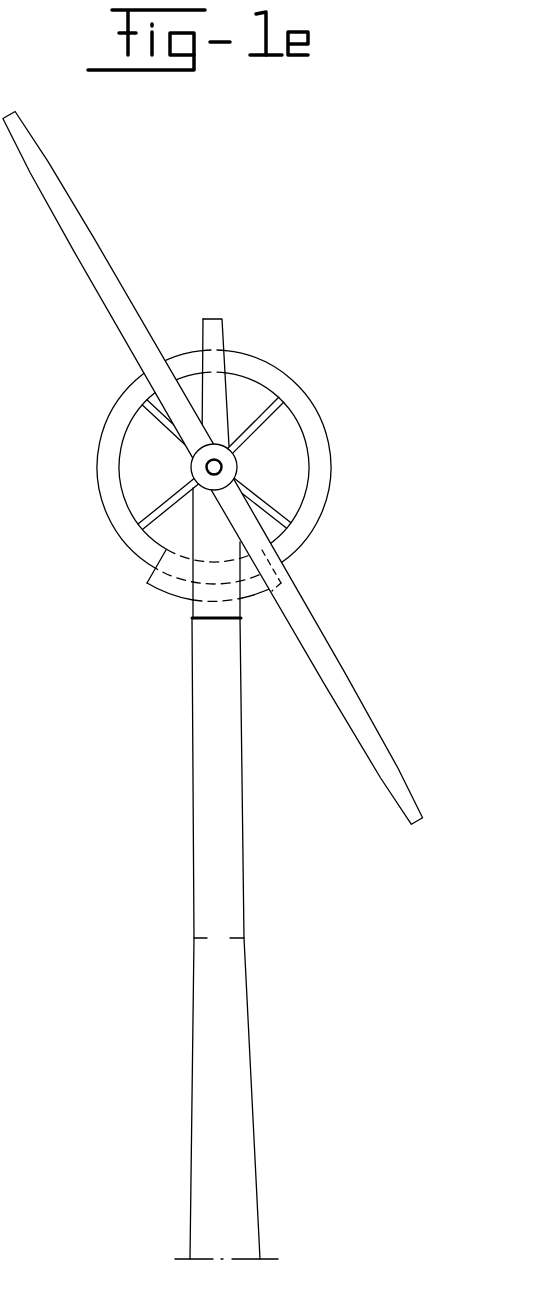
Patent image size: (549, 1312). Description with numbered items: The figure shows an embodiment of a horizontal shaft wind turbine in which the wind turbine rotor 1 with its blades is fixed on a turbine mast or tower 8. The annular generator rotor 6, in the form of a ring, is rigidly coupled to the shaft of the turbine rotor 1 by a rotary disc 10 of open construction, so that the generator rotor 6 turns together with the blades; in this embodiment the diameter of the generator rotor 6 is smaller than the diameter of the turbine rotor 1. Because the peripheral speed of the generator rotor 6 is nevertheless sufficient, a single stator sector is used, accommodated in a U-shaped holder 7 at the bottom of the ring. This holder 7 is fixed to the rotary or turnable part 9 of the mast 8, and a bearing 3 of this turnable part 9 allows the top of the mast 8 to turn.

The wind turbine rotor 1 is at (79, 231).
The bearing 3 is at (207, 623).
The generator rotor 6 is at (303, 405).
The U-shaped holder 7 is at (167, 587).
The turbine mast or tower 8 is at (228, 818).
The turnable part of the mast 9 is at (232, 610).
The rotary disc 10 is at (260, 403).